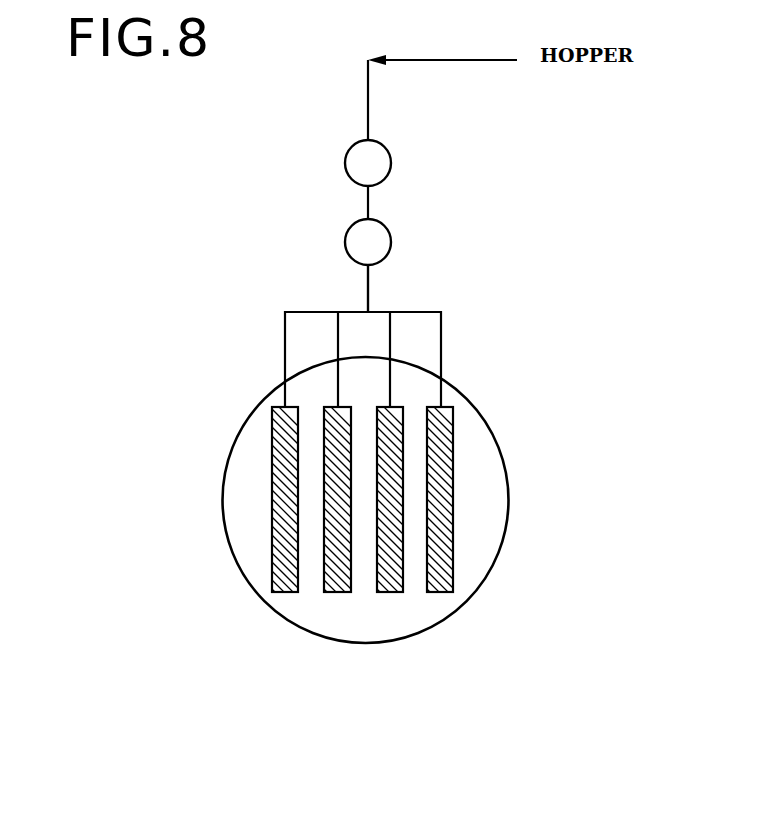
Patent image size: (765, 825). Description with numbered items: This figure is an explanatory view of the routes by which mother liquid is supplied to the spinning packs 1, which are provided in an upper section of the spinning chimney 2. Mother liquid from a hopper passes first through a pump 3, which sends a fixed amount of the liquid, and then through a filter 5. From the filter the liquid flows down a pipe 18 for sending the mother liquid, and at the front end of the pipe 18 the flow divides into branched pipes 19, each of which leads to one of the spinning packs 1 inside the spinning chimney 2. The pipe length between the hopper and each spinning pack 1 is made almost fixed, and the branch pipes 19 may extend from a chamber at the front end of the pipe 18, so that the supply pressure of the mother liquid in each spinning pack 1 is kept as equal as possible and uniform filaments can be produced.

The spinning pack 1 is at (447, 433).
The spinning chimney 2 is at (510, 512).
The pump 3 is at (390, 157).
The filter 5 is at (390, 243).
The pipe 18 is at (370, 293).
The branched pipes 19 is at (285, 330).